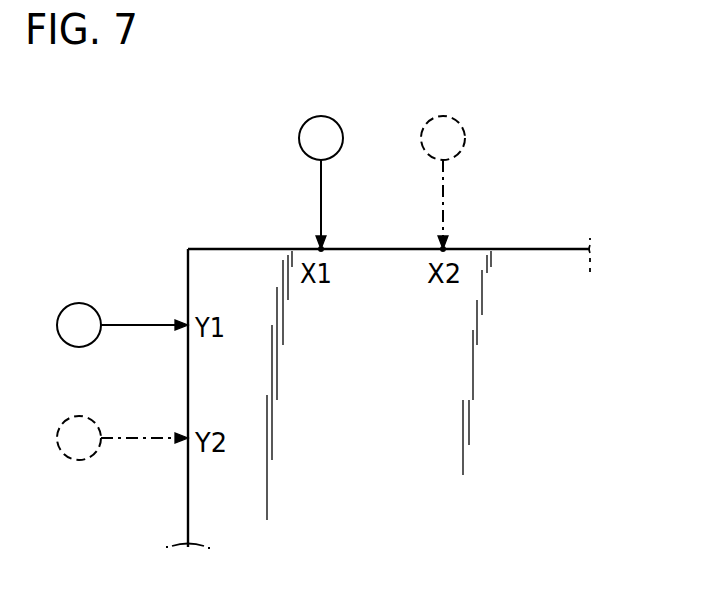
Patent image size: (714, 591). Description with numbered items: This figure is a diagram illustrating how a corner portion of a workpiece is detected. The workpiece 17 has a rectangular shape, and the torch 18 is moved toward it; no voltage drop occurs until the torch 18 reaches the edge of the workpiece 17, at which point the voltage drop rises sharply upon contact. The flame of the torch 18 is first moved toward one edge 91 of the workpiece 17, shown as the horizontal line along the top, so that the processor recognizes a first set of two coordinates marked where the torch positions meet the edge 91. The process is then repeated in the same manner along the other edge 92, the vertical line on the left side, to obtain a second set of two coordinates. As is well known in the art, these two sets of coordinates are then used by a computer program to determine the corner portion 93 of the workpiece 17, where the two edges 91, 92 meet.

The workpiece 17 is at (392, 438).
The torch 18 is at (328, 124).
The edge 91 is at (537, 249).
The Y address line 92 is at (188, 470).
The corner portion 93 is at (212, 266).